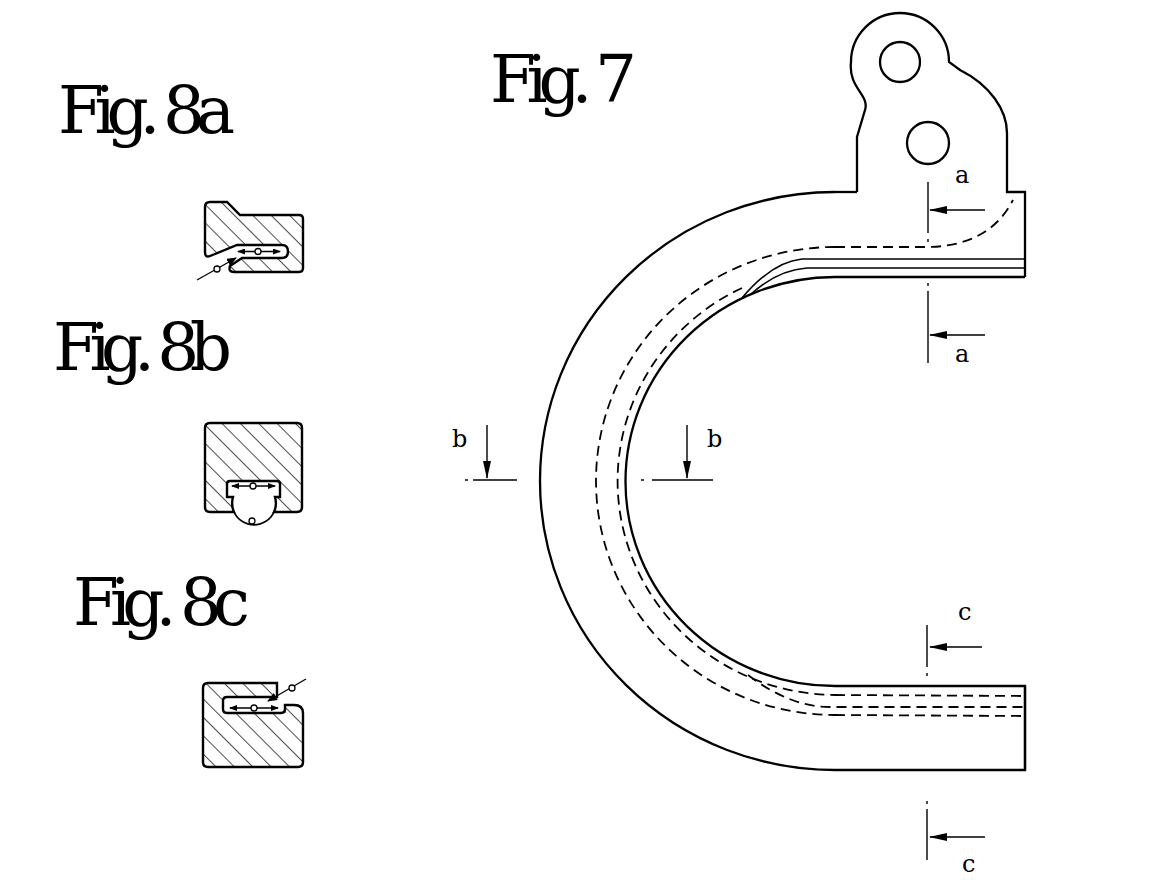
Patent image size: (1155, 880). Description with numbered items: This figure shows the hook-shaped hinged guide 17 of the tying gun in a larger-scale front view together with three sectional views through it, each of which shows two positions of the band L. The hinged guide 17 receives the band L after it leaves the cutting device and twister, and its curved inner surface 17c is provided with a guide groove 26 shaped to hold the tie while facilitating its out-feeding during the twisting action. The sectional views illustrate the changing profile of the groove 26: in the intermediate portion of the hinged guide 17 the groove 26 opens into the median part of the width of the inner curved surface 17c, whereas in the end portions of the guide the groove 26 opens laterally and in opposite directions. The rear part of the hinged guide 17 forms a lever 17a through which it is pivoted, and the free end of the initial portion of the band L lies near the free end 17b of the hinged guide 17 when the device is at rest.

In FIG. 7, the hinged guide 17 is at (593, 602).
In FIG. 8A, the hinged guide 17 is at (293, 220).
In FIG. 8B, the hinged guide 17 is at (228, 438).
In FIG. 8C, the hinged guide 17 is at (228, 753).
In FIG. 7, the lever 17a is at (858, 58).
In FIG. 7, the free end 17b is at (1030, 712).
In FIG. 7, the inner edge 17c is at (660, 578).
In FIG. 8A, the inner edge 17c is at (257, 272).
In FIG. 8B, the inner edge 17c is at (278, 508).
In FIG. 8C, the inner edge 17c is at (232, 685).
In FIG. 7, the guide groove 26 is at (655, 330).
In FIG. 8A, the guide groove 26 is at (286, 256).
In FIG. 8B, the guide groove 26 is at (237, 495).
In FIG. 8C, the guide groove 26 is at (223, 698).
In FIG. 8A, the band L is at (202, 262).
In FIG. 8B, the band L is at (234, 529).
In FIG. 8C, the band L is at (308, 683).